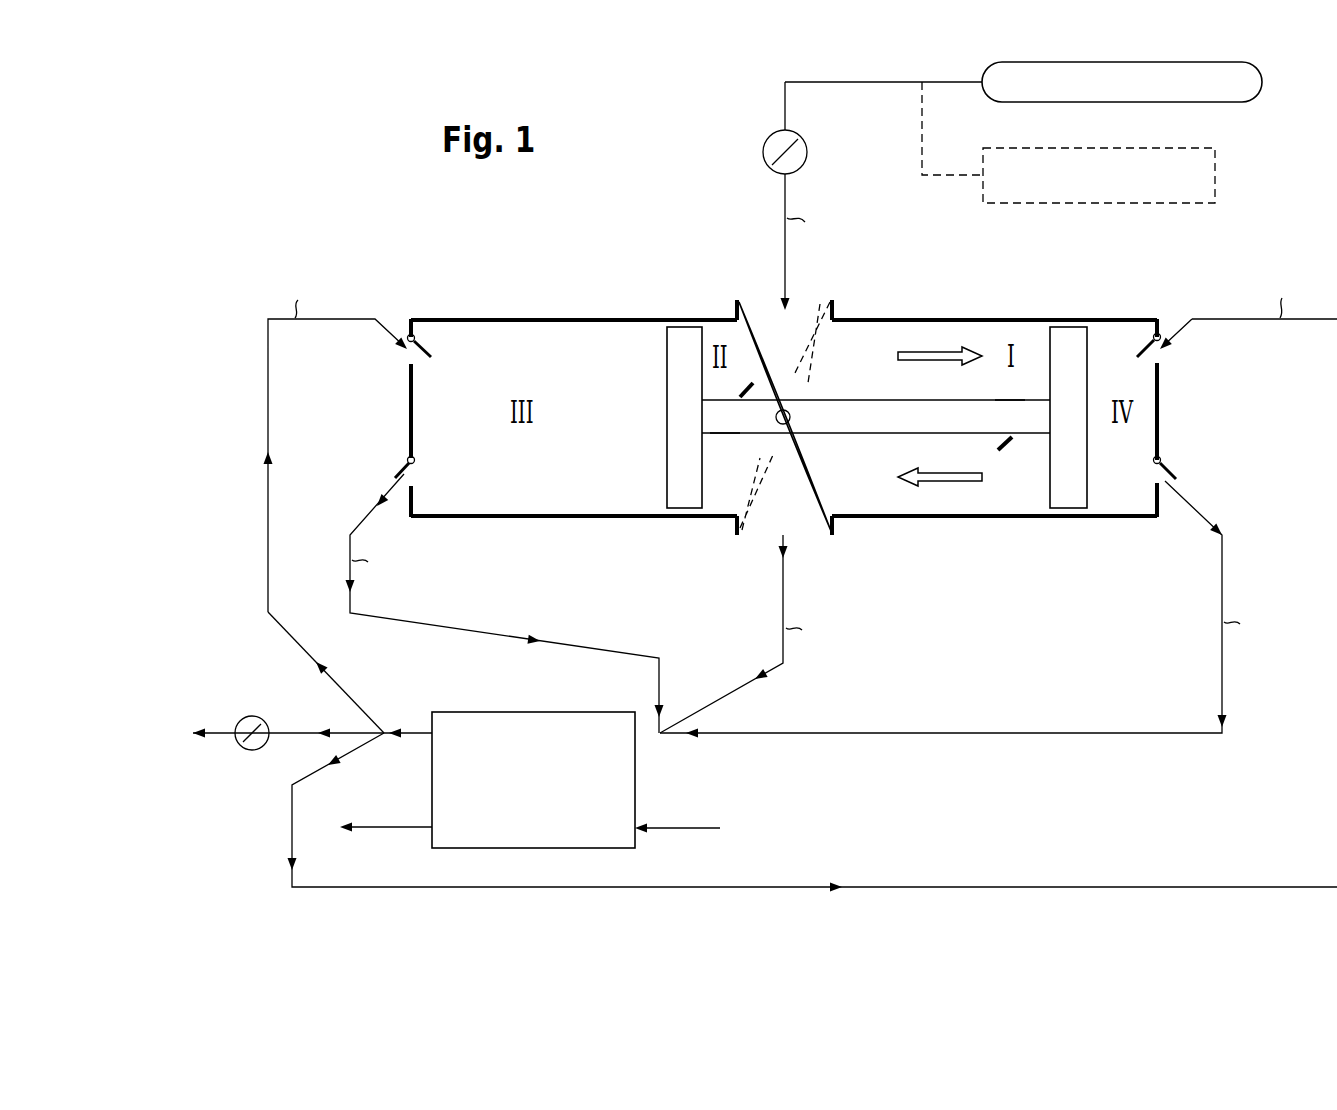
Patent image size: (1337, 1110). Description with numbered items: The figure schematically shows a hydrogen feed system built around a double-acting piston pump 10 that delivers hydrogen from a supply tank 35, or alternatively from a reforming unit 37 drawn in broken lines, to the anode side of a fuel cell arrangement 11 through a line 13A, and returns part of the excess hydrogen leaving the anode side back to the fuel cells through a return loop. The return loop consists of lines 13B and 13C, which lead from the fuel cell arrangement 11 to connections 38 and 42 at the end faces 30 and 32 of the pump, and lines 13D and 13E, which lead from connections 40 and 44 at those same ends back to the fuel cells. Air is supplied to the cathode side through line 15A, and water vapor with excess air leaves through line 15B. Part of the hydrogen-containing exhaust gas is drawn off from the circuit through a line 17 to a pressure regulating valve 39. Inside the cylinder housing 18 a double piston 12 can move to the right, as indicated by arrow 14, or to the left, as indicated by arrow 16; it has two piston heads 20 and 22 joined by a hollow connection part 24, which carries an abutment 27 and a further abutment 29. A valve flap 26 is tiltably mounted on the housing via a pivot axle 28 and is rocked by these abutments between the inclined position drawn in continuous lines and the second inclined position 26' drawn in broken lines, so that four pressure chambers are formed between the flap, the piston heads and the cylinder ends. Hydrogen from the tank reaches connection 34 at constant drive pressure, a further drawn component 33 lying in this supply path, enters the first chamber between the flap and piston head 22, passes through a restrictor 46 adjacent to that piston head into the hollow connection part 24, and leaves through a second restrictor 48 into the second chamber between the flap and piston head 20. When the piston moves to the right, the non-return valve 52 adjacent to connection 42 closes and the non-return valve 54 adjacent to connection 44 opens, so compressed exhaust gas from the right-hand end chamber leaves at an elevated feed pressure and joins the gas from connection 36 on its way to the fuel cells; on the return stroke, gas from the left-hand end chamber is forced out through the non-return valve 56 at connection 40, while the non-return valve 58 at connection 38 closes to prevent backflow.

The double-acting piston pump 10 is at (782, 413).
The fuel cell arrangement 11 is at (530, 789).
The double piston 12 is at (876, 435).
The line 13A is at (778, 665).
The line 13B is at (268, 525).
The line 13C is at (995, 887).
The line 13D is at (570, 645).
The line 13E is at (1005, 732).
The arrow 14 is at (918, 320).
The line 15A is at (700, 830).
The line 15B is at (370, 830).
The arrow 16 is at (948, 484).
The hydrogen discharge line 17 is at (302, 728).
The cylinder housing 18 is at (1018, 518).
The piston head 20 is at (667, 345).
The piston head 22 is at (1078, 478).
The hollow connection part 24 is at (885, 398).
The valve flap 26 is at (776, 388).
The second position of valve flap 26' is at (761, 405).
The abutment 27 is at (742, 388).
The pivot axle 28 is at (791, 415).
The further abutment 29 is at (1005, 452).
The left-hand end 30 is at (411, 416).
The right-hand end 32 is at (1160, 410).
The pressure regulator 33 is at (763, 143).
The connection 34 is at (772, 305).
The supply tank 35 is at (1258, 96).
The connection 36 is at (797, 530).
The reforming unit 37 is at (1216, 172).
The connection 38 is at (410, 357).
The pressure regulating valve 39 is at (248, 716).
The connection 40 is at (413, 467).
The connection 42 is at (1160, 357).
The connection 44 is at (1157, 470).
The restrictor 46 is at (1000, 400).
The second restrictor 48 is at (727, 434).
The non-return valve 52 is at (1138, 346).
The non-return valve 54 is at (1178, 468).
The non-return valve 56 is at (405, 465).
The non-return valve 58 is at (414, 336).